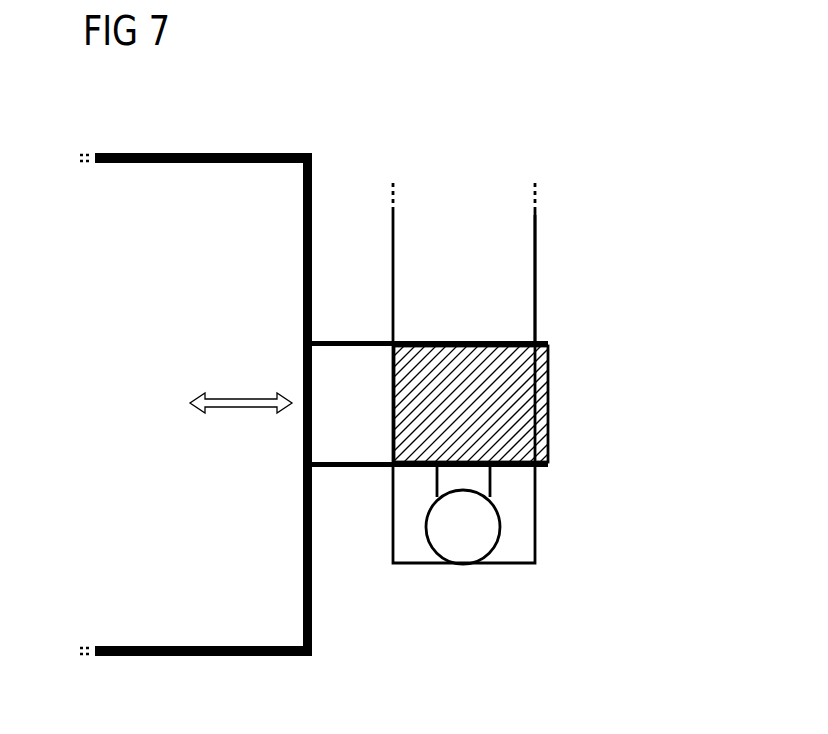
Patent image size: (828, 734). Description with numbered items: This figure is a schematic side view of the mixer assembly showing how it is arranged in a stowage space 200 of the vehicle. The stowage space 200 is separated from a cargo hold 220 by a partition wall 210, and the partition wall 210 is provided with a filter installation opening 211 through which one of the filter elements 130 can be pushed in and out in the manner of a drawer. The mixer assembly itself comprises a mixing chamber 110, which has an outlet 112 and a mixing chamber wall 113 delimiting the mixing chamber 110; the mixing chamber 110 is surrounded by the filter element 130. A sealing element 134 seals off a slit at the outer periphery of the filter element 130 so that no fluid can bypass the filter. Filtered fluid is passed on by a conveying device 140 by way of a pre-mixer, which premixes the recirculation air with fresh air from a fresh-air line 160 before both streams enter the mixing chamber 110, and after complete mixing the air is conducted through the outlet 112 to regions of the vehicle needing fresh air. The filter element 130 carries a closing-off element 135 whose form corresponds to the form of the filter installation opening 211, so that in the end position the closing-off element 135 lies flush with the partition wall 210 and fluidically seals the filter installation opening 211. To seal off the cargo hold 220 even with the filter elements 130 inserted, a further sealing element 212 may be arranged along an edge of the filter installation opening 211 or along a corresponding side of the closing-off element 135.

The mixing chamber 110 is at (512, 228).
The outlet 112 is at (510, 190).
The mixing chamber wall 113 is at (537, 272).
The filter element 130 is at (540, 400).
The sealing element 134 is at (510, 341).
The closing-off element 135 is at (348, 447).
The conveying device 140 is at (481, 479).
The fresh-air line 160 is at (465, 548).
The stowage space 200 is at (371, 178).
The partition wall 210 is at (313, 178).
The filter installation opening 211 is at (294, 360).
The further sealing element 212 is at (304, 342).
The cargo hold 220 is at (187, 181).